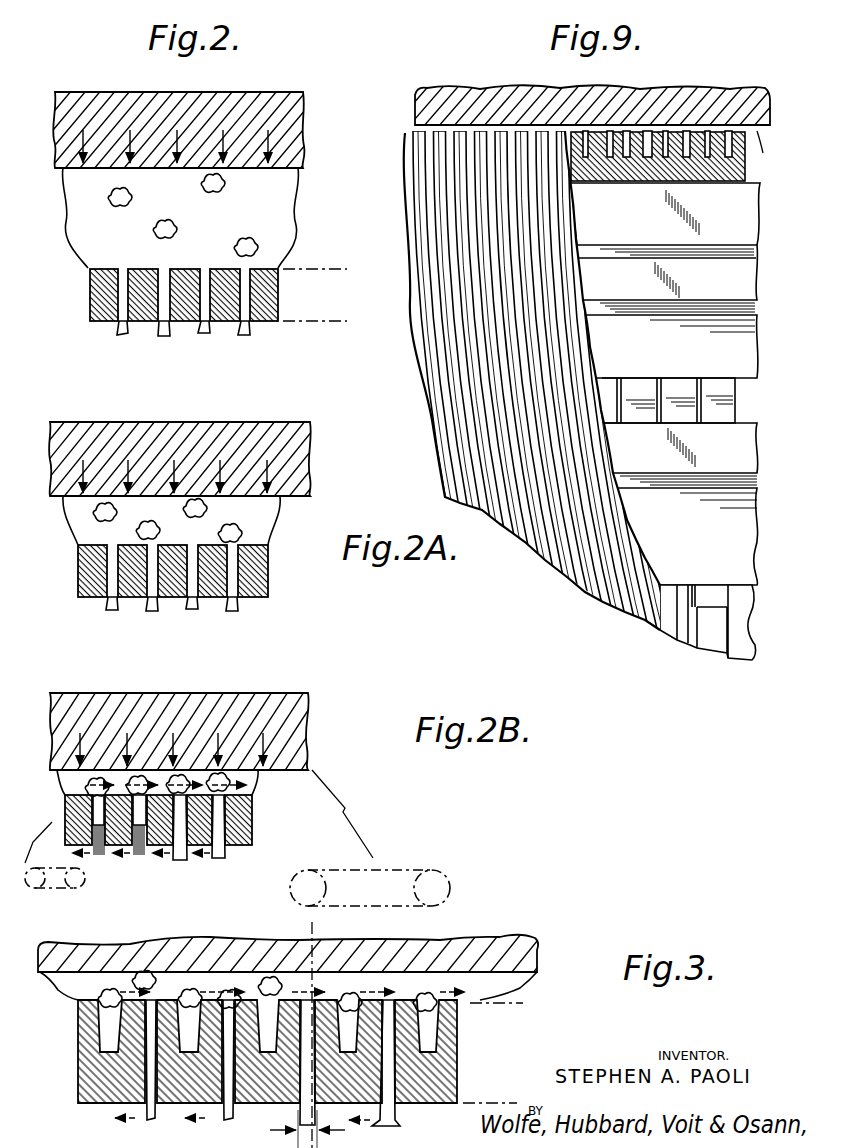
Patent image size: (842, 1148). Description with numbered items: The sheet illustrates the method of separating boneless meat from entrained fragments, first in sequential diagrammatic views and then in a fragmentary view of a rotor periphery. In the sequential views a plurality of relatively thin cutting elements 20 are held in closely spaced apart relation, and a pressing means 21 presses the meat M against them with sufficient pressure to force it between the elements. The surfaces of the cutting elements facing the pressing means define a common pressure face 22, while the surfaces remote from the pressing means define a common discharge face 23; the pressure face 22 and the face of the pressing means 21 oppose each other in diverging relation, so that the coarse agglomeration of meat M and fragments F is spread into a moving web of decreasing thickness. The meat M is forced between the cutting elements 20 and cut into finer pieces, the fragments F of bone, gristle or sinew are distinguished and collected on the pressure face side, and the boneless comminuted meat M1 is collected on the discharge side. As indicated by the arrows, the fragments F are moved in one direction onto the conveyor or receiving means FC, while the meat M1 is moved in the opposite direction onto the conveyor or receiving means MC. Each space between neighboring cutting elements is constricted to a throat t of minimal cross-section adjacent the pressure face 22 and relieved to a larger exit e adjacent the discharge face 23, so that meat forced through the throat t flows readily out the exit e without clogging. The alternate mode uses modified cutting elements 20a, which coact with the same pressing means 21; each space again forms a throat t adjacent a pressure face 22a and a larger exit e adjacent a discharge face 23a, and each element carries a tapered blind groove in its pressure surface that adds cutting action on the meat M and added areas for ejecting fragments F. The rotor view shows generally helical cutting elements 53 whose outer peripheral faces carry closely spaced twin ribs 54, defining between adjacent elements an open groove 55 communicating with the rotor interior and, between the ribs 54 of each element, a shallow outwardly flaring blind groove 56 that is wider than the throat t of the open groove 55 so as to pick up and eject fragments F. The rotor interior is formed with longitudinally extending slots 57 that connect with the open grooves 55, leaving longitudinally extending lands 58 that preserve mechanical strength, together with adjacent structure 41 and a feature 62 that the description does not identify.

In FIG. 2, the pressing means 21 is at (288, 118).
In FIG. 2A, the pressing means 21 is at (293, 453).
In FIG. 2B, the pressing means 21 is at (286, 700).
In FIG. 3, the pressing means 21 is at (530, 955).
In FIG. 2, the cutting elements 20 is at (140, 293).
In FIG. 2A, the cutting elements 20 is at (175, 575).
In FIG. 2B, the cutting elements 20 is at (70, 808).
In FIG. 3, the modified cutting elements 20a is at (172, 1080).
In FIG. 2, the pressure face 22 is at (331, 262).
In FIG. 2, the discharge face 23 is at (323, 326).
In FIG. 3, the pressure face 22a is at (527, 1001).
In FIG. 3, the discharge face 23a is at (469, 1108).
In FIG. 2, the meat M is at (288, 215).
In FIG. 2A, the meat M is at (253, 523).
In FIG. 2B, the meat M is at (253, 789).
In FIG. 3, the meat M is at (70, 992).
In FIG. 2, the boneless comminuted meat M1 is at (200, 333).
In FIG. 2A, the boneless comminuted meat M1 is at (193, 608).
In FIG. 2B, the boneless comminuted meat M1 is at (180, 857).
In FIG. 3, the boneless comminuted meat M1 is at (152, 1127).
In FIG. 2, the fragments F is at (112, 198).
In FIG. 2A, the fragments F is at (138, 531).
In FIG. 2B, the meat conveyor or receiving means MC is at (74, 866).
In FIG. 2B, the fragment conveyor or receiving means FC is at (437, 870).
In FIG. 3, the throat t is at (318, 938).
In FIG. 3, the exit e is at (307, 1129).
In FIG. 9, the mounting bar 41 is at (707, 92).
In FIG. 9, the cutting elements 53 is at (653, 184).
In FIG. 9, the twin ribs 54 is at (458, 130).
In FIG. 9, the open groove 55 is at (547, 130).
In FIG. 9, the blind groove 56 is at (647, 131).
In FIG. 9, the longitudinally extending slots 57 is at (750, 401).
In FIG. 9, the longitudinally extending lands 58 is at (753, 223).
In FIG. 9, the slot 62 is at (773, 151).